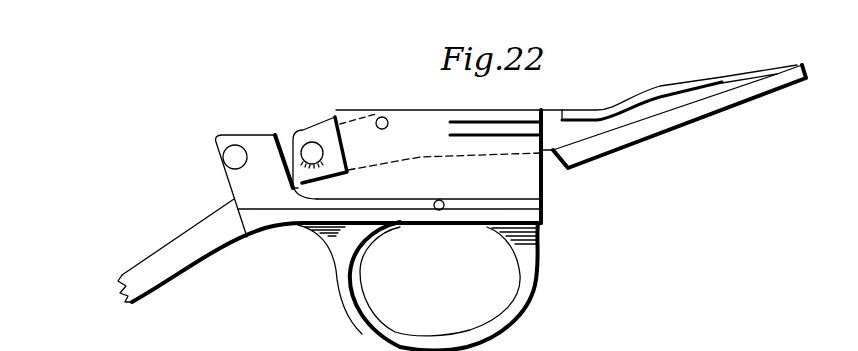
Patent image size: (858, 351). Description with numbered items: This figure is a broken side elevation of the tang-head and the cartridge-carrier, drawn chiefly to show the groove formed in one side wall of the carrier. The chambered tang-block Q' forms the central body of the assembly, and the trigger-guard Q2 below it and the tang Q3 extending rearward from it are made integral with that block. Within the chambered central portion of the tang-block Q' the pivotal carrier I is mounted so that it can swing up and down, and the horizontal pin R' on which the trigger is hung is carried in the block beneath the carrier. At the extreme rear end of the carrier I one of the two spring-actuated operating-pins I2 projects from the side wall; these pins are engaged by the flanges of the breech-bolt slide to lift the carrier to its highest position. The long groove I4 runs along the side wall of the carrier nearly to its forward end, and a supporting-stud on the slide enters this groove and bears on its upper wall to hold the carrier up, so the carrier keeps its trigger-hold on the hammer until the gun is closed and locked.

The cartridge-carrier I is at (690, 115).
The spring-actuated operating-pins I2 is at (312, 152).
The groove I4 is at (590, 127).
The horizontal pin R' is at (447, 191).
The chambered tang-block Q' is at (389, 271).
The trigger-guard Q2 is at (343, 270).
The tang Q3 is at (210, 250).